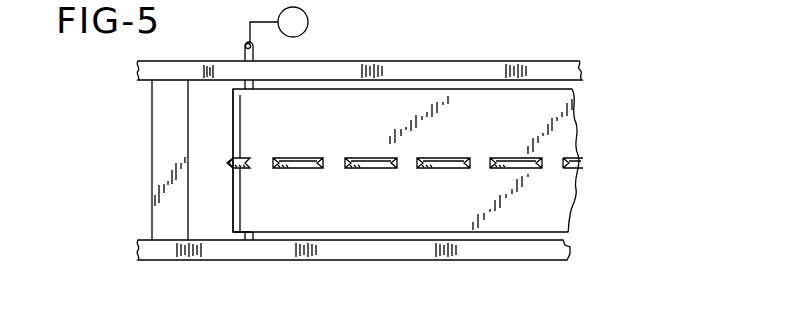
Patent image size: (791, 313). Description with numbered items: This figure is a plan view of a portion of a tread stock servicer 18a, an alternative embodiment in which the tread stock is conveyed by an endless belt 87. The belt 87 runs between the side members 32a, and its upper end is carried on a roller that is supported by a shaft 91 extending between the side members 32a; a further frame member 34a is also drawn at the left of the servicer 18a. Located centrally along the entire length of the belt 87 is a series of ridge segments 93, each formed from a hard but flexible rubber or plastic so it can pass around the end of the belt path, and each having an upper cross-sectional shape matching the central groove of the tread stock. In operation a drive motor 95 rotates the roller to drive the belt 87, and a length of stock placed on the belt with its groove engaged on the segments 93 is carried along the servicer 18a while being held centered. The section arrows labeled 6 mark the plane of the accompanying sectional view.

The servicer 18a is at (610, 45).
The side members 32a is at (412, 61).
The frame cross member 34a is at (152, 128).
The endless belt 87 is at (556, 219).
The shaft 91 is at (245, 85).
The ridge segments 93 is at (360, 157).
The drive motor 95 is at (305, 33).
The section line 6- 6 is at (220, 212).